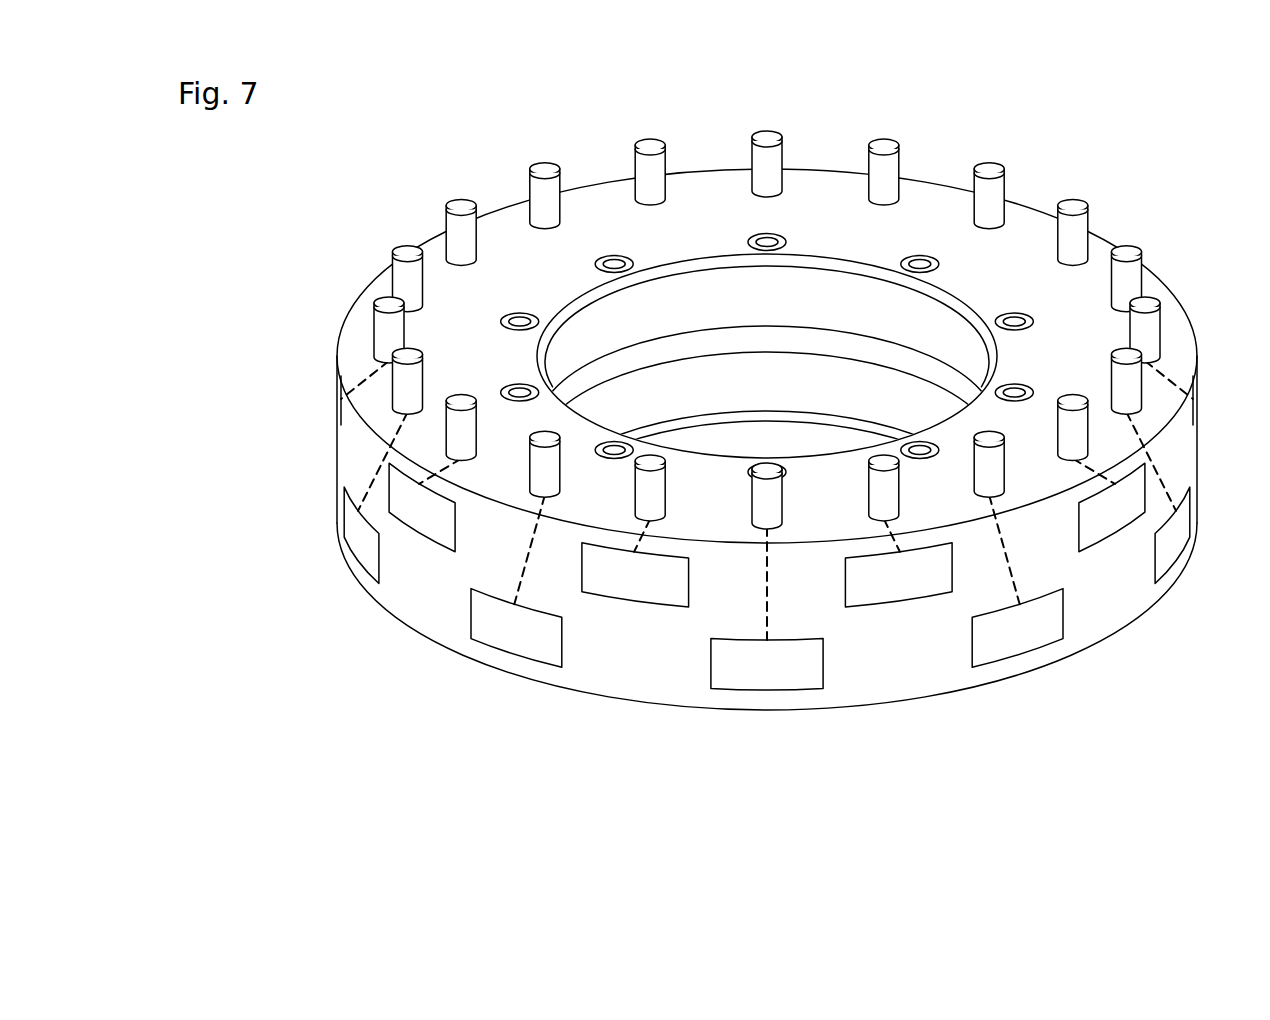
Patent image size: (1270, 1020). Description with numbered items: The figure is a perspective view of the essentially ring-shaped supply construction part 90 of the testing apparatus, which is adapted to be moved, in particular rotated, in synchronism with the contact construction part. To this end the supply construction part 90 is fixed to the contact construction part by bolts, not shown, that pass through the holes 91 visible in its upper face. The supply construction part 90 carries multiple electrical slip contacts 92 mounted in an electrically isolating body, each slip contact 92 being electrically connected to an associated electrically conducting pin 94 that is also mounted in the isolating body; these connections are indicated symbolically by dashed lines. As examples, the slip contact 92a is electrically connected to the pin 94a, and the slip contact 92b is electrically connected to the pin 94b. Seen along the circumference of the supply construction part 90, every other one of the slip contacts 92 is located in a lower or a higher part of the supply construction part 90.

The supply construction part 90 is at (312, 318).
The holes 91 is at (922, 256).
The electrical slip contacts 92 is at (767, 571).
The electrically conducting pin 94 is at (810, 456).
The pin 94a is at (630, 507).
The slip contact 92a is at (645, 607).
The pin 94b is at (753, 513).
The slip contact 92b is at (767, 693).